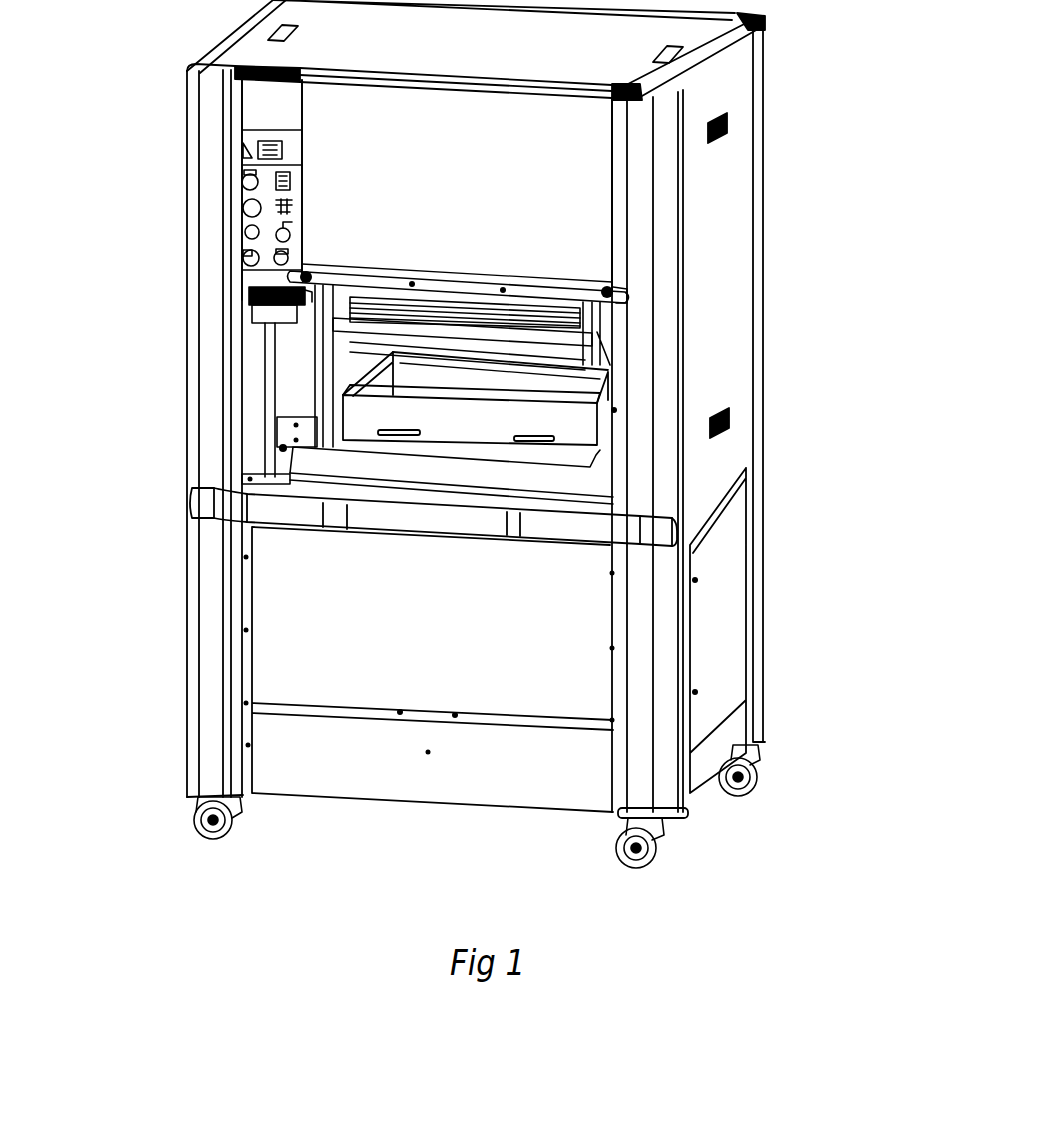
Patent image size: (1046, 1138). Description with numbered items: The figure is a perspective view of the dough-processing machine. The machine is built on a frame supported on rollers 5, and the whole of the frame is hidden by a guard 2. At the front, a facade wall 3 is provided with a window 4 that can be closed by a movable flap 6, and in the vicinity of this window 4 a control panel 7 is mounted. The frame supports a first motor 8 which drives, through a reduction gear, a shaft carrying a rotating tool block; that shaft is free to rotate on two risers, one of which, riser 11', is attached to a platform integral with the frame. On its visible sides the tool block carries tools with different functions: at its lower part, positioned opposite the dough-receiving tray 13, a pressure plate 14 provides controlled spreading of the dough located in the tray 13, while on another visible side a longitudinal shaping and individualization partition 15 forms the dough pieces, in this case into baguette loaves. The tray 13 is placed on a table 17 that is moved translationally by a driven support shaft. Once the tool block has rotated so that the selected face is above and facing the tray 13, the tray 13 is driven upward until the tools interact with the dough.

The guard 2 is at (718, 257).
The facade wall 3 is at (476, 190).
The window 4 is at (252, 402).
The rollers 5 is at (246, 829).
The movable flap 6 is at (278, 489).
The control panel 7 is at (243, 142).
The first motor 8 is at (246, 305).
The riser 11' is at (198, 400).
The dough-receiving tray 13 is at (573, 430).
The pressure plate 14 is at (576, 382).
The longitudinal partition 15 is at (338, 327).
The table 17 is at (366, 465).